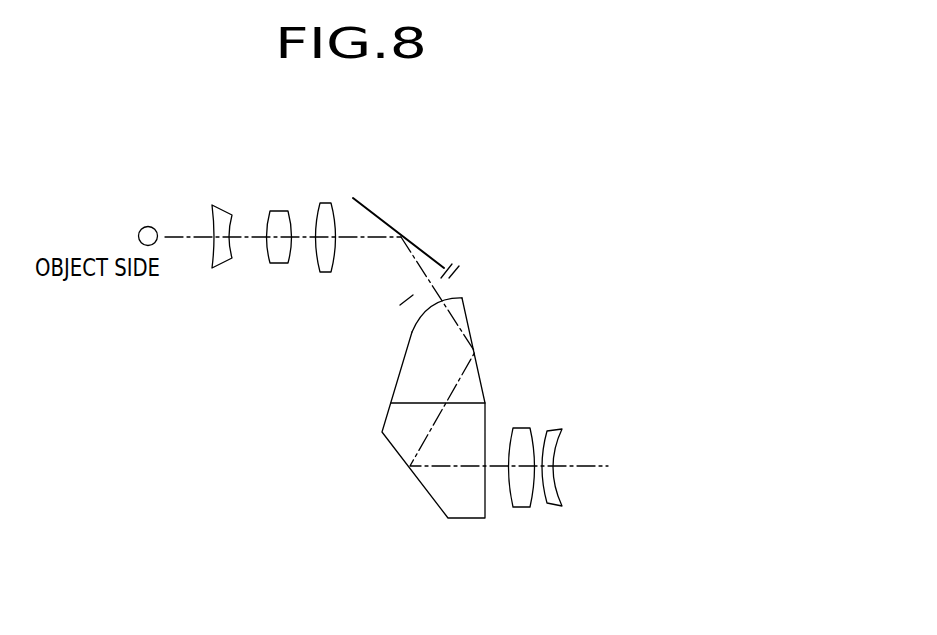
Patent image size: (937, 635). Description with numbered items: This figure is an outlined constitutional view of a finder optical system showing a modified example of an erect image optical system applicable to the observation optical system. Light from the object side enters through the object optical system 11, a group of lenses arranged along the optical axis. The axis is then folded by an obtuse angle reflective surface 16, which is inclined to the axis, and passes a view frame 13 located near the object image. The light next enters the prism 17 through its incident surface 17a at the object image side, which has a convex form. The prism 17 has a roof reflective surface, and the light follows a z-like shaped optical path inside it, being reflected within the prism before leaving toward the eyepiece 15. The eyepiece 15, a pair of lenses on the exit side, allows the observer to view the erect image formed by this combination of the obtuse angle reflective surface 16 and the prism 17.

The object optical system 11 is at (339, 197).
The obtuse angle reflective surface 16 is at (372, 212).
The view frame 13 is at (449, 271).
The prism 17 is at (445, 382).
The incident surface 17a is at (450, 300).
The eyepiece 15 is at (498, 507).